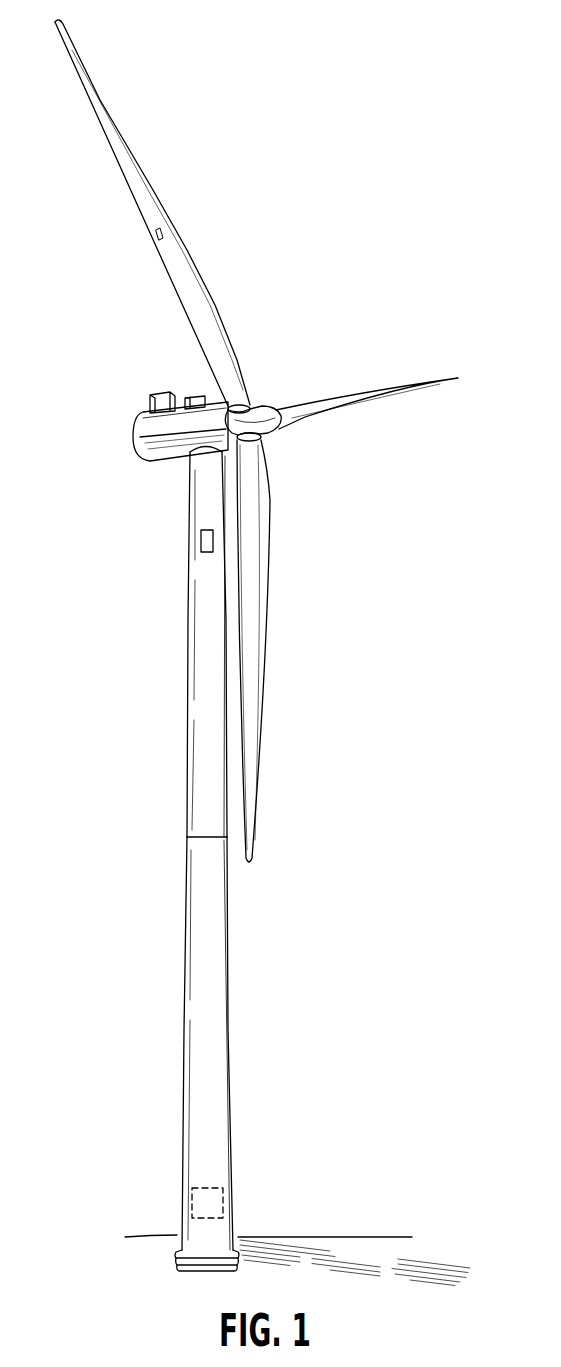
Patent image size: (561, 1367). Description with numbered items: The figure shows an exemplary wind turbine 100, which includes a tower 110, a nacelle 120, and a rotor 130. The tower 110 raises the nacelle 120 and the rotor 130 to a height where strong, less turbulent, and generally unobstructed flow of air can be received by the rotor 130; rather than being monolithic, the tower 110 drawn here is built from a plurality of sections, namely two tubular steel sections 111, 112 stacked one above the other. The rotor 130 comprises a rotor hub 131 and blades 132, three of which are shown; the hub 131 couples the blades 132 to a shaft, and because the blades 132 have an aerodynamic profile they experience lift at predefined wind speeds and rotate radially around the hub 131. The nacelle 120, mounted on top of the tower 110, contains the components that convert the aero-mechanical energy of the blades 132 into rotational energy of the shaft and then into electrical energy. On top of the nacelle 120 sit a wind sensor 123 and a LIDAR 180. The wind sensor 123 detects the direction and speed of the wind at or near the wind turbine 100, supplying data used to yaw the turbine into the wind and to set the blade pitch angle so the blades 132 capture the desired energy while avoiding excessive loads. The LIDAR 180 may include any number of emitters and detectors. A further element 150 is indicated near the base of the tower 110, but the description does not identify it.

The wind turbine 100 is at (390, 265).
The tower 110 is at (182, 710).
The tubular steel section 111 is at (192, 1033).
The tubular steel section 112 is at (193, 622).
The nacelle 120 is at (128, 435).
The wind sensor 123 is at (156, 393).
The rotor 130 is at (274, 443).
The rotor hub 131 is at (254, 404).
The blade 132 is at (97, 112).
The foundation 150 is at (192, 1199).
The LIDAR 180 is at (198, 396).